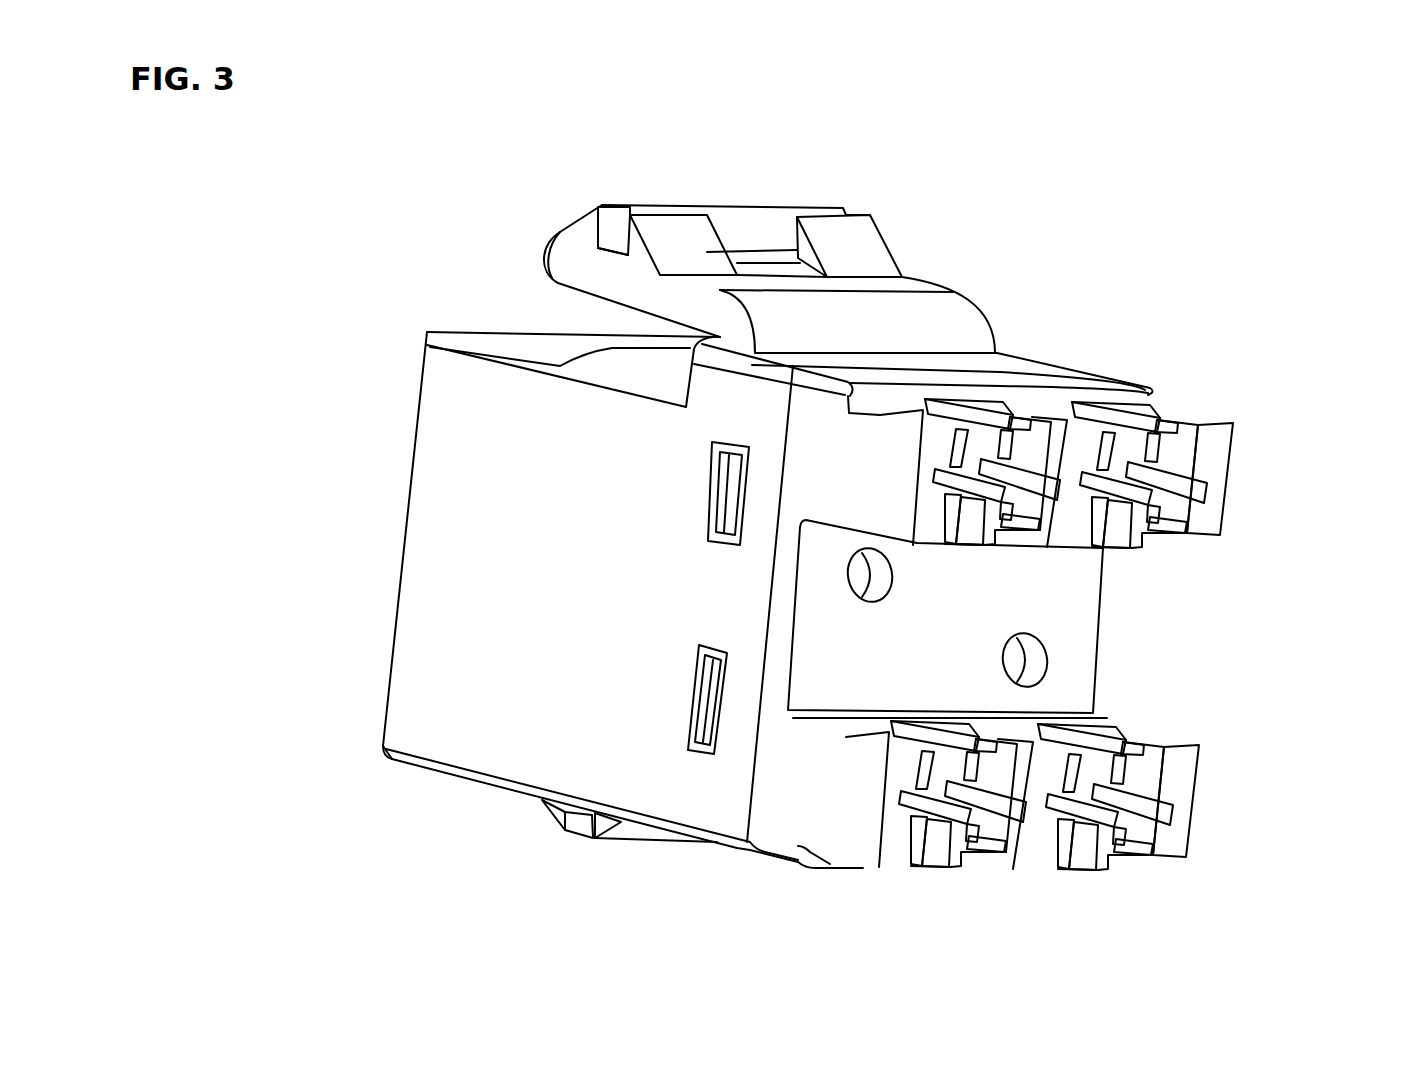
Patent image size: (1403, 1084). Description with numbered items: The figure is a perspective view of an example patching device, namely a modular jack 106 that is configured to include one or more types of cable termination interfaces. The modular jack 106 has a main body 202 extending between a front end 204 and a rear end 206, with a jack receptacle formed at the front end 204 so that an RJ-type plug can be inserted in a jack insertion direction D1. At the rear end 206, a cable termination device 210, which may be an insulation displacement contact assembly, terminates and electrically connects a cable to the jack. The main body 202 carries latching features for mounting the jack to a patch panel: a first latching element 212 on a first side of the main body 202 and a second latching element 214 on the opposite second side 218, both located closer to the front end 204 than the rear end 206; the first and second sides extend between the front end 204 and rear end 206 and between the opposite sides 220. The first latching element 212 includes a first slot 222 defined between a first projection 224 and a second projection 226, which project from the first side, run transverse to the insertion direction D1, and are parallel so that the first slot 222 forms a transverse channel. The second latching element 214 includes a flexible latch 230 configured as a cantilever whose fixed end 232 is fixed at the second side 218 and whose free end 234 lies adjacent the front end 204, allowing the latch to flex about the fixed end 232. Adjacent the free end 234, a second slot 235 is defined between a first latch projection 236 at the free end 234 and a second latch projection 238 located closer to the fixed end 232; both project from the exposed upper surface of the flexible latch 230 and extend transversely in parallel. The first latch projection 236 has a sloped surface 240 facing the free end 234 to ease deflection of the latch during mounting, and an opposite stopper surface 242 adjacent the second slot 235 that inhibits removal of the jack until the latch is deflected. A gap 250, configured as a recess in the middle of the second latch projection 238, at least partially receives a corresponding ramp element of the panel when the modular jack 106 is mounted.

The modular jack 106 is at (834, 500).
The main body 202 is at (722, 560).
The front end 204 is at (350, 755).
The rear end 206 is at (1102, 890).
The cable termination device 210 is at (1231, 388).
The first latching element 212 is at (599, 879).
The second latching element 214 is at (784, 216).
The second side 218 is at (533, 343).
The opposite sides 220 is at (447, 497).
The first slot 222 is at (588, 822).
The first projection 224 is at (555, 813).
The second projection 226 is at (640, 832).
The flexible latch 230 is at (910, 285).
The fixed end 232 is at (1008, 338).
The free end 234 is at (520, 228).
The second slot 235 is at (614, 230).
The first latch projection 236 is at (600, 228).
The second latch projection 238 is at (673, 227).
The sloped surface 240 is at (585, 232).
The stopper surface 242 is at (738, 225).
The gap 250 is at (770, 228).
The jack insertion direction D1 is at (338, 497).